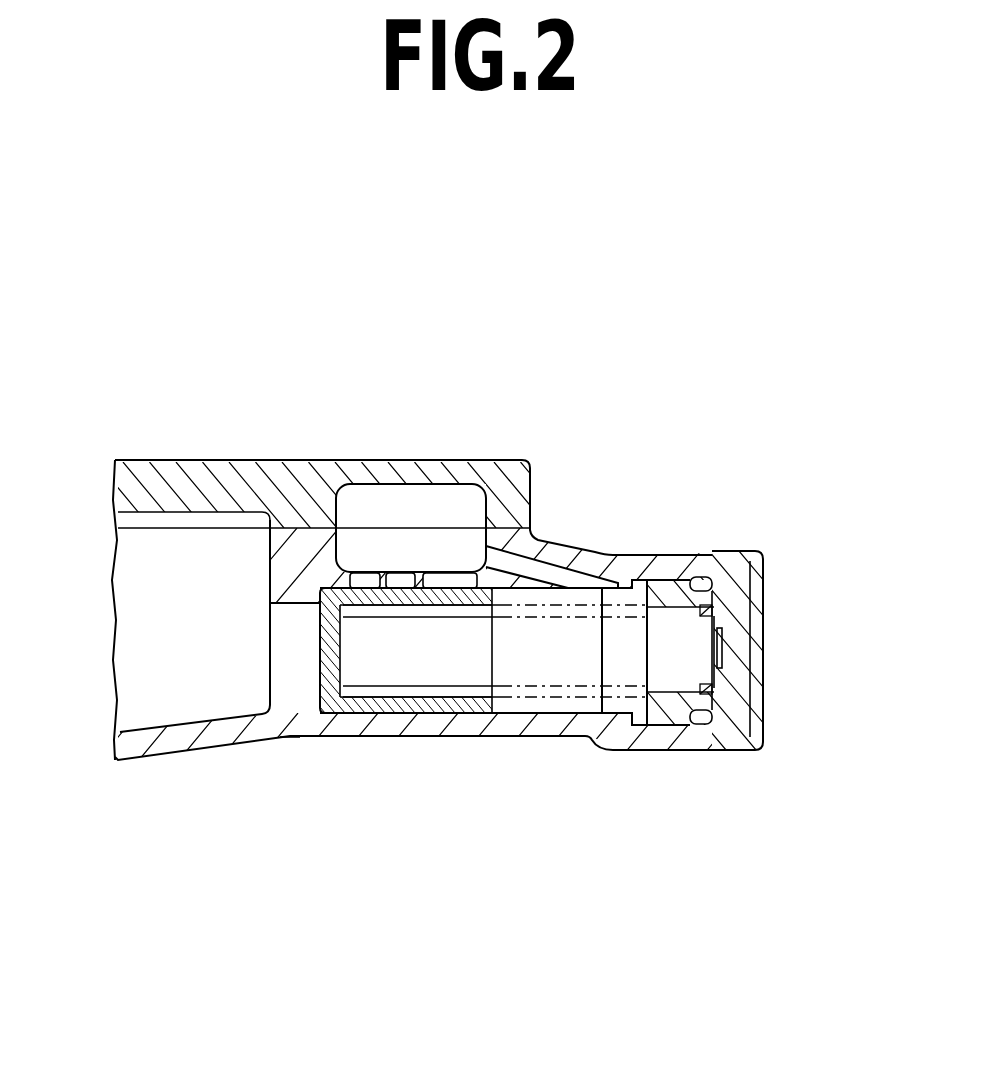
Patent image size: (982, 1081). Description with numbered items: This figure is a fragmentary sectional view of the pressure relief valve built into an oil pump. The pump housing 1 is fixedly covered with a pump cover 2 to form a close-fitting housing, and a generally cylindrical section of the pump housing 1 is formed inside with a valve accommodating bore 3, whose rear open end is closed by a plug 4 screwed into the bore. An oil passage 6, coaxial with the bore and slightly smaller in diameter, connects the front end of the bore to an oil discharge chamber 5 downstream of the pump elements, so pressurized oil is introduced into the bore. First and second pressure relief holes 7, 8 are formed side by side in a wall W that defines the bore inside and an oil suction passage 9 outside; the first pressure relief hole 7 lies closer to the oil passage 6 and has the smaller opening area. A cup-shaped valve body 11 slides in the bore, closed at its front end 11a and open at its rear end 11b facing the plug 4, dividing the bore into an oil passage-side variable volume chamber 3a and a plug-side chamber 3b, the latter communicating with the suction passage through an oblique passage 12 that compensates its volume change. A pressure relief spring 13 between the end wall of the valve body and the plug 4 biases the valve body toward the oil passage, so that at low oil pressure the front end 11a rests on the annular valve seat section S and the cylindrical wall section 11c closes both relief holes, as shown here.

The pump housing 1 is at (147, 753).
The pump cover 2 is at (162, 478).
The valve accommodating bore 3 is at (533, 702).
The oil passage-side variable volume chamber 3a is at (308, 600).
The plug-side chamber 3b is at (617, 710).
The plug 4 is at (733, 713).
The oil discharge chamber 5 is at (168, 612).
The oil passage 6 is at (282, 678).
The first pressure relief hole 7 is at (367, 577).
The second pressure relief hole 8 is at (450, 577).
The oil suction passage 9 is at (405, 503).
The valve body 11 is at (424, 705).
The front end of the valve body 11a is at (316, 720).
The rear end of the valve body 11b is at (477, 700).
The cylindrical wall section of the valve body 11c is at (390, 707).
The passage 12 is at (585, 577).
The pressure relief spring 13 is at (705, 607).
The annular valve seat section S is at (290, 737).
The wall W is at (405, 577).